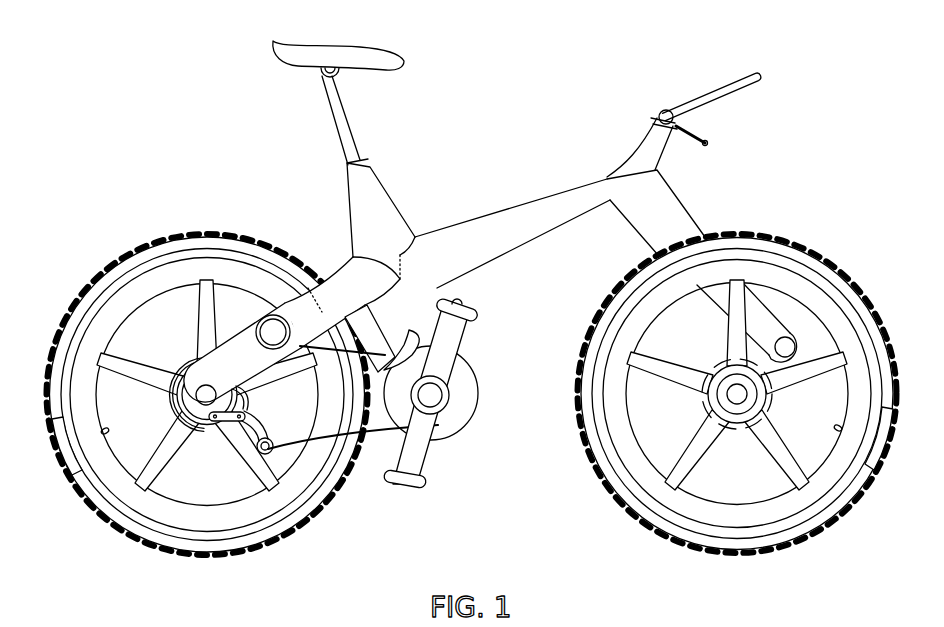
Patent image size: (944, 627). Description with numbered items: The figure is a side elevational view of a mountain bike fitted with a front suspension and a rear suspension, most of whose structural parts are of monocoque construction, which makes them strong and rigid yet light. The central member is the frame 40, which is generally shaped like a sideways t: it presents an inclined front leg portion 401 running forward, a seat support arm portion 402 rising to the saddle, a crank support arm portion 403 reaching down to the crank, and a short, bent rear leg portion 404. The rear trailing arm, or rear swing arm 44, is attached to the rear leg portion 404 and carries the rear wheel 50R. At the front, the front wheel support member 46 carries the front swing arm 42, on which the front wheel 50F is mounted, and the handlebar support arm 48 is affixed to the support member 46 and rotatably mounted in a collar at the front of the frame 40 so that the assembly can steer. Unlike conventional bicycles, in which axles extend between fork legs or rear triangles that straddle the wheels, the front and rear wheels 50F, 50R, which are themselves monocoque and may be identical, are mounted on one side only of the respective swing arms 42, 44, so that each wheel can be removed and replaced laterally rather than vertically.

The frame 40 is at (434, 240).
The inclined front leg portion 401 is at (540, 202).
The seat support arm portion 402 is at (388, 192).
The crank support arm portion 403 is at (435, 293).
The short, bent rear leg portion 404 is at (337, 270).
The rear swing arm 44 is at (248, 337).
The front wheel support member 46 is at (678, 200).
The handlebar support arm 48 is at (627, 155).
The front swing arm 42 is at (770, 358).
The rear wheel 50R is at (95, 278).
The front wheel 50F is at (803, 248).